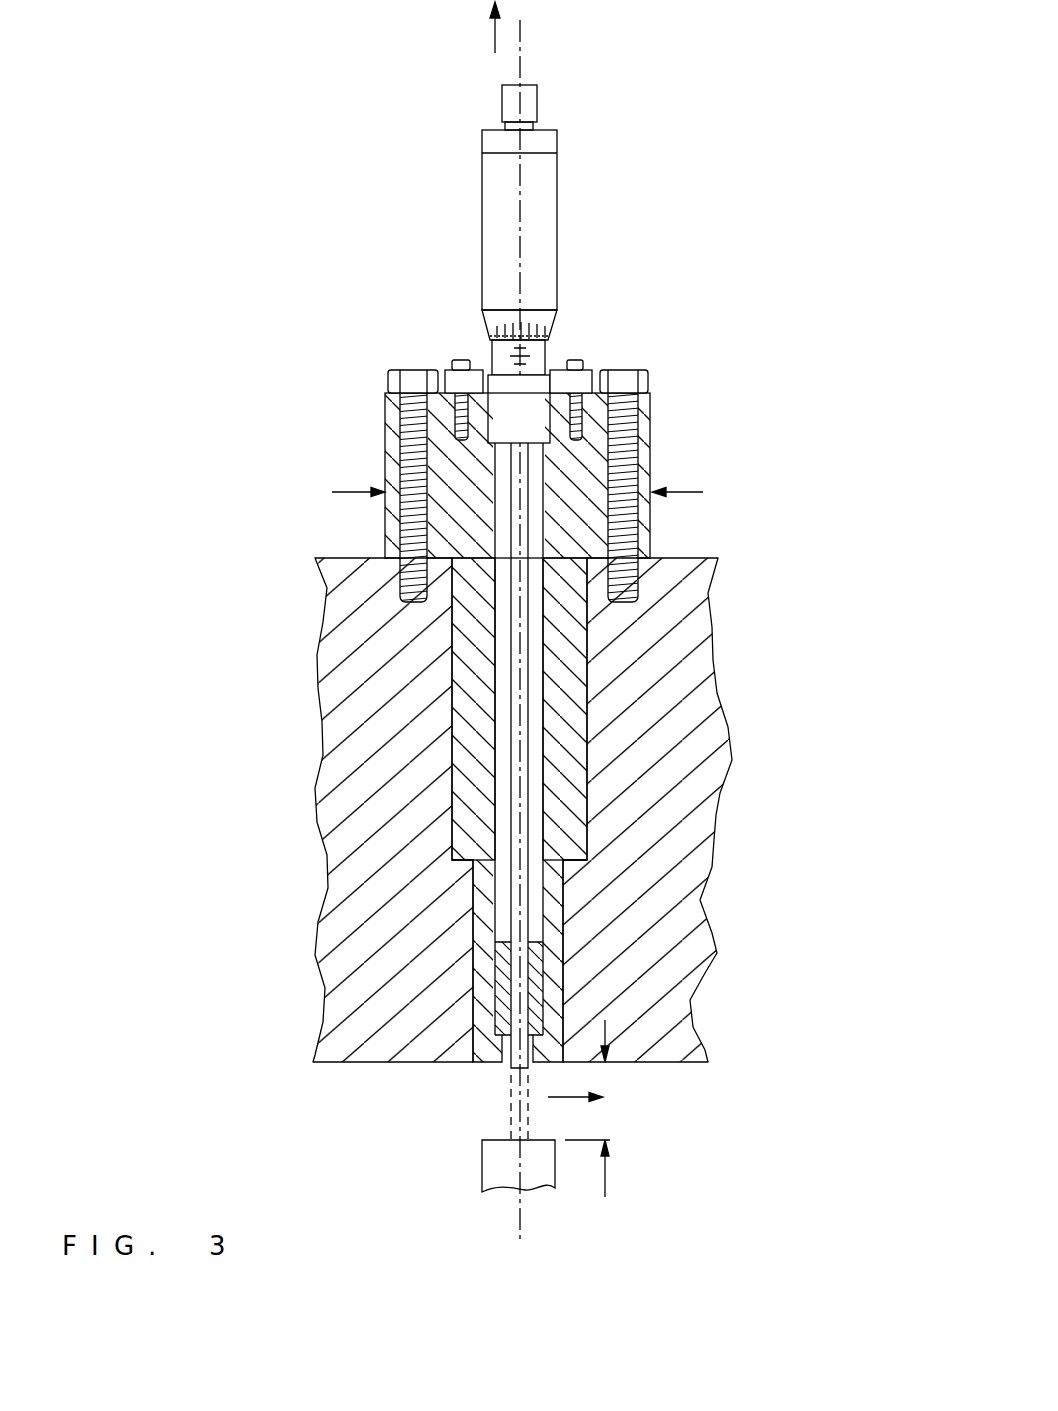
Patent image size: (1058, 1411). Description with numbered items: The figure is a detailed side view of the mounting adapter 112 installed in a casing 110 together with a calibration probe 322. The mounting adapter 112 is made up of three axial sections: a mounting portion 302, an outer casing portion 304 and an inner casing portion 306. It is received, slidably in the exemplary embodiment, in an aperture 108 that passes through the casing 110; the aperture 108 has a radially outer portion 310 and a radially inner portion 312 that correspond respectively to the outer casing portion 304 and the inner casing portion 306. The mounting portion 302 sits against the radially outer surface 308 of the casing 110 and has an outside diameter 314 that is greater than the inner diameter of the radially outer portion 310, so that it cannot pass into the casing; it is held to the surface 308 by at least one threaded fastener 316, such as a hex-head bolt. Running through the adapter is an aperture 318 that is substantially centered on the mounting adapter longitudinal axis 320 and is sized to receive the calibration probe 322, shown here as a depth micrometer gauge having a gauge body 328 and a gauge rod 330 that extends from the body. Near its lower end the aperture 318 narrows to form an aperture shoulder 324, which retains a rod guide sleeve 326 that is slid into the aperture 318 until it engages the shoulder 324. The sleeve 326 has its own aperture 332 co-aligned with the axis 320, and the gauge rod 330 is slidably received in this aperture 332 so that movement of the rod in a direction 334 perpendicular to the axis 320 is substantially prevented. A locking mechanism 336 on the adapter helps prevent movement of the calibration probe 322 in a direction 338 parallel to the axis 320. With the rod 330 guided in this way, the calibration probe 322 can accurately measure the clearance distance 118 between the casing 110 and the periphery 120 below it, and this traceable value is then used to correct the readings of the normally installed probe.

The aperture 108 is at (620, 660).
The casing 110 is at (690, 580).
The mounting adapter 112 is at (762, 386).
The clearance distance 118 is at (606, 1182).
The periphery 120 is at (482, 1140).
The mounting portion 302 is at (177, 558).
The outer casing portion 304 is at (177, 862).
The inner casing portion 306 is at (177, 1058).
The radially outer surface 308 is at (356, 553).
The radially outer portion 310 is at (287, 862).
The radially inner portion 312 is at (287, 1058).
The outside diameter 314 is at (701, 493).
The threaded fastener 316 is at (415, 370).
The aperture 318 is at (535, 795).
The mounting adapter longitudinal axis 320 is at (521, 55).
The calibration probe 322 is at (592, 191).
The aperture shoulder 324 is at (543, 1020).
The rod guide sleeve 326 is at (533, 970).
The gauge body 328 is at (557, 278).
The gauge rod 330 is at (530, 712).
The aperture 332 is at (524, 932).
The direction 334 is at (570, 1097).
The locking mechanism 336 is at (583, 360).
The direction 338 is at (495, 40).